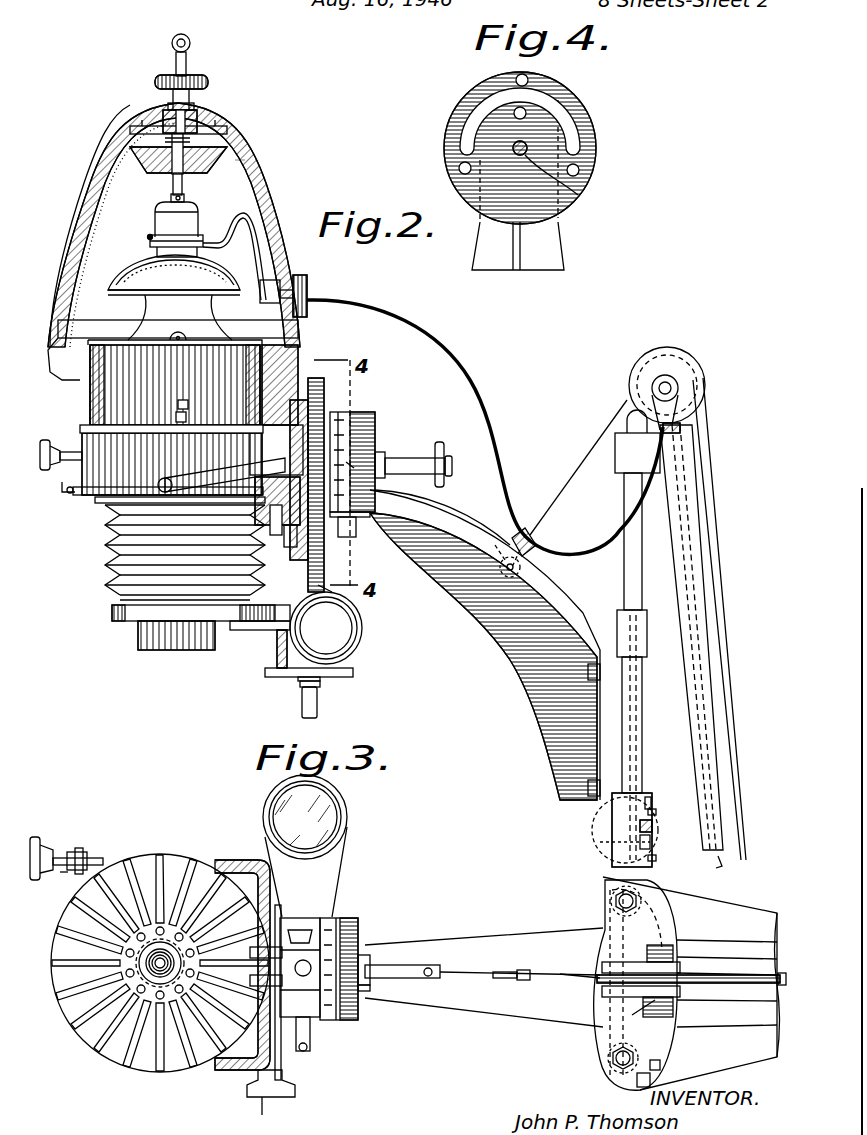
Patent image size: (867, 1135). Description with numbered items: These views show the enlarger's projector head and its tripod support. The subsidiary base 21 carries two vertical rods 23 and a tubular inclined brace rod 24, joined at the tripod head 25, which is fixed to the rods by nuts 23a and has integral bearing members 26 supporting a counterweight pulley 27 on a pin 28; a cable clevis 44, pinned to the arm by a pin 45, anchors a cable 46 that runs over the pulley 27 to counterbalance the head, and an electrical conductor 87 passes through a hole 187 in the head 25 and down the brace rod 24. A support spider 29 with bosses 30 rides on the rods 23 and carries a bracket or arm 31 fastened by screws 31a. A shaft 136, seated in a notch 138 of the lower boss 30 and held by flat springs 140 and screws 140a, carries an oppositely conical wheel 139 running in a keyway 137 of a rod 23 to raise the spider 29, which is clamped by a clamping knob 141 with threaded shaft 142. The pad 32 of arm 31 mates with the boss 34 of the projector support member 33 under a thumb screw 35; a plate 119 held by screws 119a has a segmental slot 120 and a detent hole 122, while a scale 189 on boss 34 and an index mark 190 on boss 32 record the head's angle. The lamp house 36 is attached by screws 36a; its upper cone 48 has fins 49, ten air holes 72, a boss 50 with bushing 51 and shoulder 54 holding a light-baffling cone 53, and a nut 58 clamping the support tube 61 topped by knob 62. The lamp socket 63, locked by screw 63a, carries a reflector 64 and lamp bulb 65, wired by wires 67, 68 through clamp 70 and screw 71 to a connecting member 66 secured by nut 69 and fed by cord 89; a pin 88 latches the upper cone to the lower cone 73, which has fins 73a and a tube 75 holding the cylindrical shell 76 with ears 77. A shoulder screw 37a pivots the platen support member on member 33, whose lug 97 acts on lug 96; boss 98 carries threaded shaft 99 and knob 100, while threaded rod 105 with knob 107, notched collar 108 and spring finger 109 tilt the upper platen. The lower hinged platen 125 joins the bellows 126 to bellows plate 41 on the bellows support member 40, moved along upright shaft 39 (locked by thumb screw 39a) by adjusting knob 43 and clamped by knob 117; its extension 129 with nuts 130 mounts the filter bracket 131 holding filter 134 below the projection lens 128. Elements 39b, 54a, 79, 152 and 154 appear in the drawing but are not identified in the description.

In FIG. 3, the tripod subsidiary-support base 21 is at (728, 1040).
In FIG. 2, the tripod vertical support rods 23 is at (624, 592).
In FIG. 2, the nuts 23a is at (620, 422).
In FIG. 3, the nuts 23a is at (640, 900).
In FIG. 2, the tripod brace rod 24 is at (710, 683).
In FIG. 3, the tripod head 25 is at (632, 1015).
In FIG. 2, the bearing members 26 is at (678, 407).
In FIG. 3, the bearing members 26 is at (628, 955).
In FIG. 2, the counterweight pulley 27 is at (674, 362).
In FIG. 3, the counterweight pulley 27 is at (690, 973).
In FIG. 2, the pin or rivet 28 is at (672, 388).
In FIG. 2, the support spider 29 is at (615, 742).
In FIG. 2, the bosses 30 is at (620, 614).
In FIG. 4, the bracket or arm 31 is at (565, 248).
In FIG. 2, the bracket or arm 31 is at (517, 640).
In FIG. 3, the bracket or arm 31 is at (527, 940).
In FIG. 2, the screws 31a is at (588, 673).
In FIG. 2, the pad or support boss 32 is at (375, 425).
In FIG. 3, the pad or support boss 32 is at (355, 935).
In FIG. 2, the projector support member 33 is at (310, 372).
In FIG. 2, the pad or boss 34 is at (344, 537).
In FIG. 3, the pad or boss 34 is at (330, 1020).
In FIG. 4, the thumb screw 35 is at (560, 181).
In FIG. 2, the thumb screw 35 is at (405, 467).
In FIG. 3, the thumb screw 35 is at (404, 968).
In FIG. 2, the lamp house 36 is at (62, 225).
In FIG. 2, the screws 36a is at (306, 380).
In FIG. 3, the screws 36a is at (280, 953).
In FIG. 2, the shoulder screw 37a is at (275, 527).
In FIG. 2, the upright shaft 39 is at (317, 712).
In FIG. 3, the thumb screw 39a is at (360, 1022).
In FIG. 2, the pin 39b is at (348, 562).
In FIG. 2, the lower bellows support member 40 is at (255, 628).
In FIG. 2, the bellows plate 41 is at (112, 611).
In FIG. 2, the adjusting knob 43 is at (338, 628).
In FIG. 2, the cable clevis 44 is at (516, 536).
In FIG. 3, the cable clevis 44 is at (524, 972).
In FIG. 2, the pin 45 is at (522, 570).
In FIG. 2, the cable 46 is at (716, 507).
In FIG. 3, the cable 46 is at (565, 980).
In FIG. 2, the upper cone section 48 is at (266, 180).
In FIG. 3, the upper cone section 48 is at (160, 855).
In FIG. 2, the radiating fins 49 is at (252, 154).
In FIG. 3, the radiating fins 49 is at (127, 852).
In FIG. 2, the upright boss 50 is at (199, 116).
In FIG. 2, the bushing 51 is at (190, 100).
In FIG. 2, the light-baffling cone 53 is at (225, 179).
In FIG. 2, the shoulder 54 is at (170, 105).
In FIG. 2, the cone 54a is at (160, 162).
In FIG. 2, the nut 58 is at (172, 75).
In FIG. 2, the lamp house support rod or tube 61 is at (173, 186).
In FIG. 2, the knob 62 is at (190, 38).
In FIG. 2, the lamp socket 63 is at (155, 218).
In FIG. 2, the screw 63a is at (171, 200).
In FIG. 2, the reflector 64 is at (112, 292).
In FIG. 2, the lamp bulb 65 is at (150, 300).
In FIG. 2, the connecting member 66 is at (262, 298).
In FIG. 2, the wire 67 is at (250, 240).
In FIG. 2, the wire 68 is at (224, 236).
In FIG. 2, the nut 69 is at (282, 300).
In FIG. 2, the clamp 70 is at (157, 250).
In FIG. 2, the screw 71 is at (148, 237).
In FIG. 2, the holes 72 is at (148, 126).
In FIG. 3, the holes 72 is at (205, 870).
In FIG. 2, the lower cone section 73 is at (70, 374).
In FIG. 2, the radiating fins 73a is at (62, 365).
In FIG. 2, the downwardly extending cylindrical tube 75 is at (84, 430).
In FIG. 2, the cylindrical shell 76 is at (100, 406).
In FIG. 2, the ears 77 is at (176, 335).
In FIG. 2, the lug 79 is at (180, 400).
In FIG. 2, the electrical conductor 87 is at (368, 306).
In FIG. 2, the pin 88 is at (307, 292).
In FIG. 2, the cord 89 is at (95, 333).
In FIG. 2, the lug 96 is at (288, 548).
In FIG. 2, the boss or lug 97 is at (296, 558).
In FIG. 3, the boss or lug 97 is at (246, 860).
In FIG. 3, the boss 98 is at (292, 1040).
In FIG. 3, the threaded shaft 99 is at (268, 1100).
In FIG. 3, the knob 100 is at (245, 1092).
In FIG. 3, the threaded rod 105 is at (68, 856).
In FIG. 2, the knob 107 is at (60, 466).
In FIG. 3, the knob 107 is at (33, 845).
In FIG. 3, the notched collar 108 is at (80, 850).
In FIG. 3, the spring finger 109 is at (67, 872).
In FIG. 3, the knob 117 is at (297, 926).
In FIG. 4, the plate 119 is at (588, 180).
In FIG. 2, the plate 119 is at (350, 417).
In FIG. 4, the flat-head screws 119a is at (526, 110).
In FIG. 4, the segmental slot 120 is at (566, 125).
In FIG. 4, the hole 122 is at (528, 78).
In FIG. 2, the lower hinged platen 125 is at (100, 502).
In FIG. 2, the bellows 126 is at (110, 560).
In FIG. 2, the projection lens 128 is at (140, 640).
In FIG. 2, the threaded cylindrical extension 129 is at (305, 683).
In FIG. 2, the nuts 130 is at (322, 684).
In FIG. 2, the filter bracket 131 is at (266, 671).
In FIG. 3, the filter bracket 131 is at (336, 890).
In FIG. 3, the filter 134 is at (330, 825).
In FIG. 2, the shaft 136 is at (645, 825).
In FIG. 3, the shaft 136 is at (640, 1088).
In FIG. 2, the keyway 137 is at (640, 703).
In FIG. 2, the notch 138 is at (651, 800).
In FIG. 2, the oppositely conical wheel 139 is at (652, 845).
In FIG. 2, the flat springs 140 is at (652, 828).
In FIG. 2, the screws 140a is at (658, 808).
In FIG. 3, the screws 140a is at (660, 1066).
In FIG. 2, the clamping knob 141 is at (598, 828).
In FIG. 2, the threaded shaft 142 is at (600, 840).
In FIG. 2, the pin 152 is at (62, 492).
In FIG. 2, the pin 154 is at (70, 493).
In FIG. 2, the hole 187 is at (681, 428).
In FIG. 2, the scale 189 is at (338, 412).
In FIG. 3, the scale 189 is at (345, 1022).
In FIG. 2, the index mark 190 is at (354, 466).